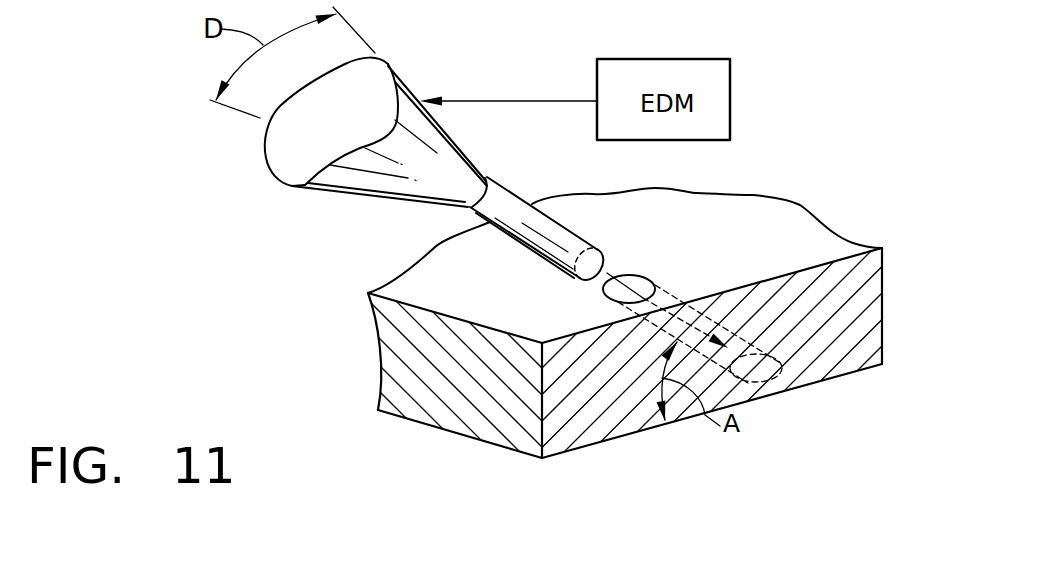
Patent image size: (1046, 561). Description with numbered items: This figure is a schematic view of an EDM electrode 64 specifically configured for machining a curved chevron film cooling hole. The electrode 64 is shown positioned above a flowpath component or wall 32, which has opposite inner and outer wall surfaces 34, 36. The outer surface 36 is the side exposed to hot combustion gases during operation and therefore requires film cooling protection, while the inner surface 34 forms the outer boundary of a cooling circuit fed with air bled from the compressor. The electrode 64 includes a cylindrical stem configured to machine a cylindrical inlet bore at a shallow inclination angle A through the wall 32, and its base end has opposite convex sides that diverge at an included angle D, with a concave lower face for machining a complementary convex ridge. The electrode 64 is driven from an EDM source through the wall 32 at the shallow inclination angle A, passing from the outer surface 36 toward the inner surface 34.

The wall 32 is at (802, 200).
The inner wall surface 34 is at (803, 387).
The outer wall surface 36 is at (717, 244).
The EDM electrode 64 is at (354, 130).